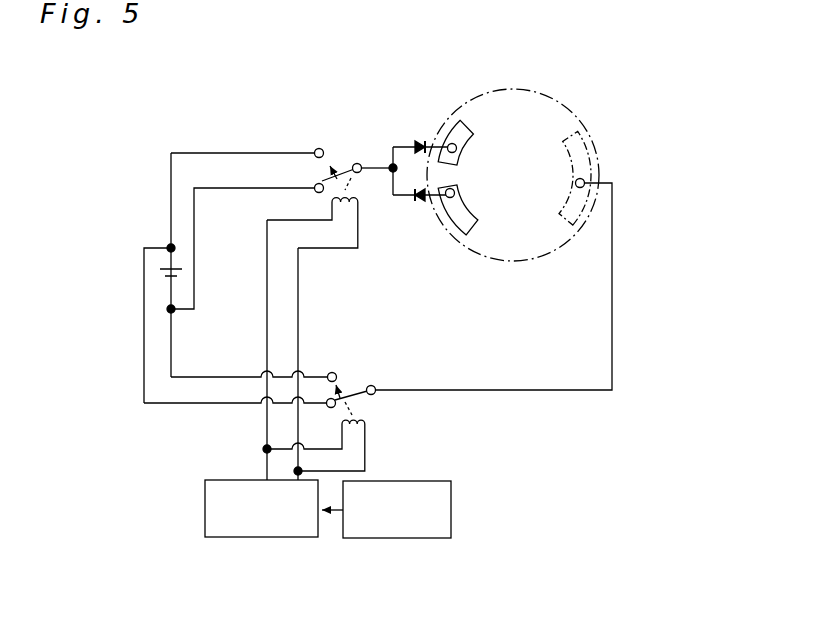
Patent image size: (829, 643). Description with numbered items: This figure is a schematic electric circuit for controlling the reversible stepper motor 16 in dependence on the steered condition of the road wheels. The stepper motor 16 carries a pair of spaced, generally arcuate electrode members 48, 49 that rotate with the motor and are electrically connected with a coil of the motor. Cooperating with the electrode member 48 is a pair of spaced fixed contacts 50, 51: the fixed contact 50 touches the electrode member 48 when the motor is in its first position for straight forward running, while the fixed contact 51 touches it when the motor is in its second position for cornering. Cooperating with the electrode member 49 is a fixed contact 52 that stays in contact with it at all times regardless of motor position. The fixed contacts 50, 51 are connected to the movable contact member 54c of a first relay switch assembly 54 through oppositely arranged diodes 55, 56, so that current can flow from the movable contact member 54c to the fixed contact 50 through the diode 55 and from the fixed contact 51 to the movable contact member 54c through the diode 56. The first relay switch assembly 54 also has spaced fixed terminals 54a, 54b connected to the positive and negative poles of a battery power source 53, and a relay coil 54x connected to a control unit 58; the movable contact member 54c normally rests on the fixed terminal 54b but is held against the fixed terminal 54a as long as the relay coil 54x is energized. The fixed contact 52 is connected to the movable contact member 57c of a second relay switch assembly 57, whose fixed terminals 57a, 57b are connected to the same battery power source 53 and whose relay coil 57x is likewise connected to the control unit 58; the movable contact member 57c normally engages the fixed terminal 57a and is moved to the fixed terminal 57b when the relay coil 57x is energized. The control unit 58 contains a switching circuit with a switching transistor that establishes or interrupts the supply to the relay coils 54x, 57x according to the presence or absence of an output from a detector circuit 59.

The stepper motor 16 is at (527, 89).
The electrode member 48 is at (452, 130).
The electrode member 49 is at (582, 167).
The fixed contact 50 is at (450, 143).
The fixed contact 51 is at (443, 205).
The fixed contact 52 is at (586, 182).
The battery power source 53 is at (156, 274).
The first relay switch assembly 54 is at (340, 148).
The fixed terminal 54a is at (316, 150).
The fixed terminal 54b is at (318, 192).
The movable contact member 54c is at (357, 163).
The relay coil 54x is at (340, 220).
The diode 55 is at (418, 143).
The diode 56 is at (416, 199).
The second relay switch assembly 57 is at (363, 373).
The fixed terminal 57a is at (345, 407).
The fixed terminal 57b is at (332, 373).
The movable contact member 57c is at (375, 388).
The relay coil 57x is at (360, 442).
The control unit 58 is at (210, 480).
The detector circuit 59 is at (452, 493).